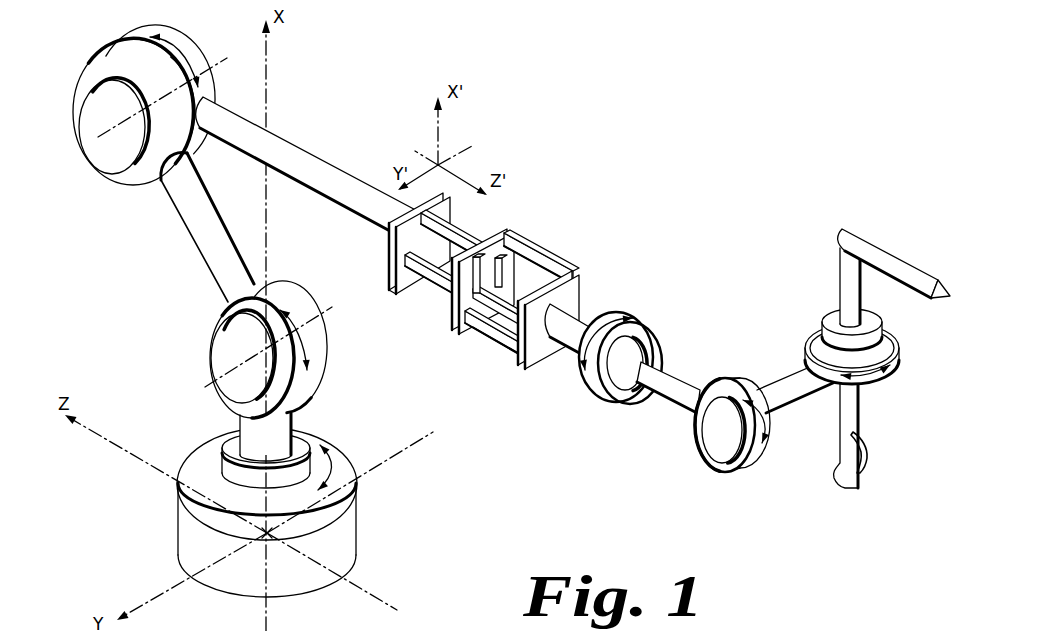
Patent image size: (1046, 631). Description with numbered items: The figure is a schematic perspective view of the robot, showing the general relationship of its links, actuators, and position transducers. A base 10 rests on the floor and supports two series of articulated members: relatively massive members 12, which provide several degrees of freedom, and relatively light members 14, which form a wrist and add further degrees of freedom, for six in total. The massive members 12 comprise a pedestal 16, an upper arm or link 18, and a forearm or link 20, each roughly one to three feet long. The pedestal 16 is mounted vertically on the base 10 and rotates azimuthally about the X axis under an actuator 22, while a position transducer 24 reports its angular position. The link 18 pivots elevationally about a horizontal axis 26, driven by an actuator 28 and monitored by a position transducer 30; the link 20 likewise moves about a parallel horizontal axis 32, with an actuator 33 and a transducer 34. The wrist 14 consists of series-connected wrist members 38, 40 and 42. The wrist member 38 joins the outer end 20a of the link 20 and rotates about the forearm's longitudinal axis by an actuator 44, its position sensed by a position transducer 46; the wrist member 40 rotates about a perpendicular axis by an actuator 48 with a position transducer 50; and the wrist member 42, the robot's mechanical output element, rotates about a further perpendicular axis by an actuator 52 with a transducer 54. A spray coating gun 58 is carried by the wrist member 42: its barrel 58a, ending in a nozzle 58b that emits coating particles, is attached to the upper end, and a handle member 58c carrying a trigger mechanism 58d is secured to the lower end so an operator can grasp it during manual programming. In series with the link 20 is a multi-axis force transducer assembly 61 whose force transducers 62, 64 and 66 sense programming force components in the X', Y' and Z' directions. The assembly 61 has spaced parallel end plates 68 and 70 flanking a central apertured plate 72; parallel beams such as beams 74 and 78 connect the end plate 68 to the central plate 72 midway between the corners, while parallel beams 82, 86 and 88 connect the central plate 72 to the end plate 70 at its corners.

The base 10 is at (293, 582).
The series-connected elongated articulated members 12 is at (254, 252).
The series-connected elongated articulated members 14 is at (862, 344).
The pedestal 16 is at (285, 427).
The upper arm or link 18 is at (216, 222).
The forearm or link 20 is at (354, 175).
The outer end of the link 20a is at (592, 326).
The actuator 22 is at (357, 468).
The position transducer 24 is at (233, 458).
The horizontal axis 26 is at (215, 373).
The actuator 28 is at (223, 305).
The position transducer 30 is at (227, 347).
The horizontal axis 32 is at (202, 75).
The actuator 33 is at (182, 50).
The transducer 34 is at (103, 148).
The wrist member 38 is at (670, 397).
The wrist member 40 is at (780, 387).
The wrist member 42 is at (839, 294).
The actuator 44 is at (590, 395).
The position transducer 46 is at (632, 395).
The actuator 48 is at (752, 472).
The position transducer 50 is at (717, 448).
The actuator 52 is at (878, 372).
The transducer 54 is at (870, 322).
The spray coating gun 58 is at (908, 270).
The barrel 58a is at (905, 265).
The nozzle 58b is at (949, 300).
The handle member 58c is at (845, 485).
The trigger mechanism 58d is at (870, 455).
The multi-axis force transducer assembly 61 is at (487, 270).
The force transducer 62 is at (465, 228).
The force transducer 64 is at (430, 291).
The force transducer 66 is at (516, 233).
The end plate 68 is at (390, 267).
The end plate 70 is at (523, 357).
The central apertured plate 72 is at (458, 328).
The beam 74 is at (452, 230).
The beam 78 is at (413, 277).
The beam 82 is at (511, 290).
The beam 86 is at (500, 346).
The beam 88 is at (513, 293).